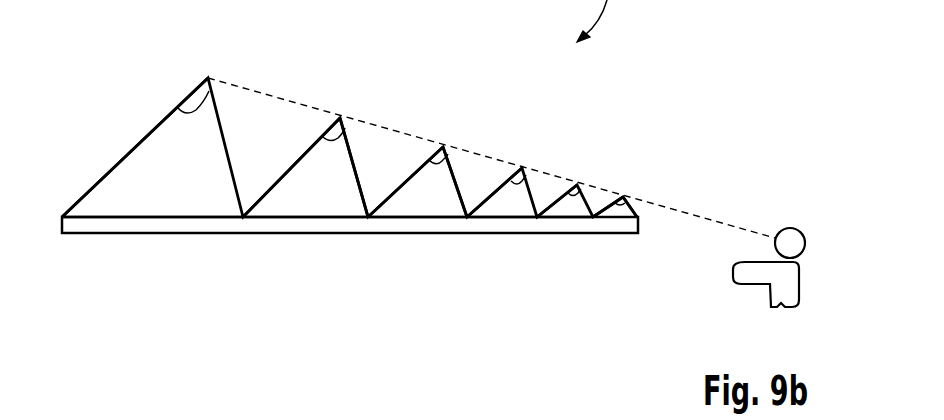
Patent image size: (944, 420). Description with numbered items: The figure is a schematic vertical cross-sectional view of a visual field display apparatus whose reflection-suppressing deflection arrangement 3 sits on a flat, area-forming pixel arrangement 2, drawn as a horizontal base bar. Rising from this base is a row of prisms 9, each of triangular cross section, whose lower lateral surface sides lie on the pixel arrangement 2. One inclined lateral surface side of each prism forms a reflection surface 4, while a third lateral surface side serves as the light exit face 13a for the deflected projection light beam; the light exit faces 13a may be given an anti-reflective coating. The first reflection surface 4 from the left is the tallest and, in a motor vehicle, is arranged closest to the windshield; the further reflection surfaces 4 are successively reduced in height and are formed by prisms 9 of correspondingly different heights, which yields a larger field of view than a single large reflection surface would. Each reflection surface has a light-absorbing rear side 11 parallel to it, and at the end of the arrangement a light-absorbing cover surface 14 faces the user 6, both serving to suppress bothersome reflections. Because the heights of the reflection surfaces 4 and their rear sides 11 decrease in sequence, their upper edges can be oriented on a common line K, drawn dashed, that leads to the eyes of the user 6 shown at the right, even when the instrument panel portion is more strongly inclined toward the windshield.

The area-forming pixel arrangement 2 is at (80, 235).
The reflection-suppressing deflection arrangement 3 is at (52, 80).
The reflection surface 4 is at (210, 80).
The user 6 is at (784, 229).
The prism 9 is at (180, 203).
The light-absorbing rear side 11 is at (152, 133).
The light exit face 13a is at (352, 160).
The light-absorbing cover surface 14 is at (638, 209).
The line K is at (714, 222).